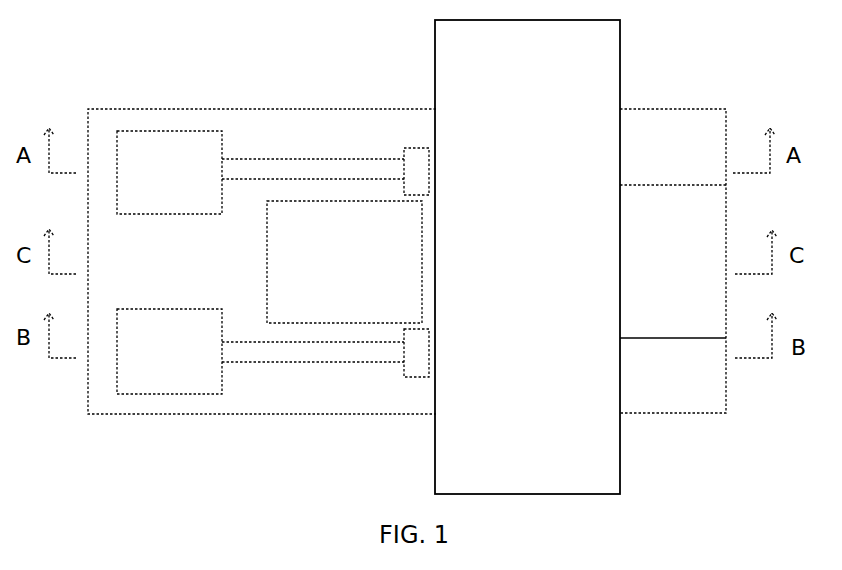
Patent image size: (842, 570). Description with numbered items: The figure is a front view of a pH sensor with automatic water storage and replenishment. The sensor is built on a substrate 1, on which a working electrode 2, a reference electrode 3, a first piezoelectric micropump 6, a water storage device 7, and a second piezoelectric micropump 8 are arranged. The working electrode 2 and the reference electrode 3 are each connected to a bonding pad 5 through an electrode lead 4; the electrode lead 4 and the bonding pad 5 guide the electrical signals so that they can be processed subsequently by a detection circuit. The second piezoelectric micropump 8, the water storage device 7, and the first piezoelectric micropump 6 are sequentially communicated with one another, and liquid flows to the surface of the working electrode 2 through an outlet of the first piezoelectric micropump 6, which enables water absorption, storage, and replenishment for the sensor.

The substrate 1 is at (262, 219).
The working electrode 2 is at (172, 122).
The reference electrode 3 is at (158, 386).
The electrode lead 4 is at (297, 311).
The bonding pad 5 is at (389, 302).
The first piezoelectric micropump 6 is at (344, 329).
The water storage device 7 is at (561, 257).
The second piezoelectric micropump 8 is at (701, 217).